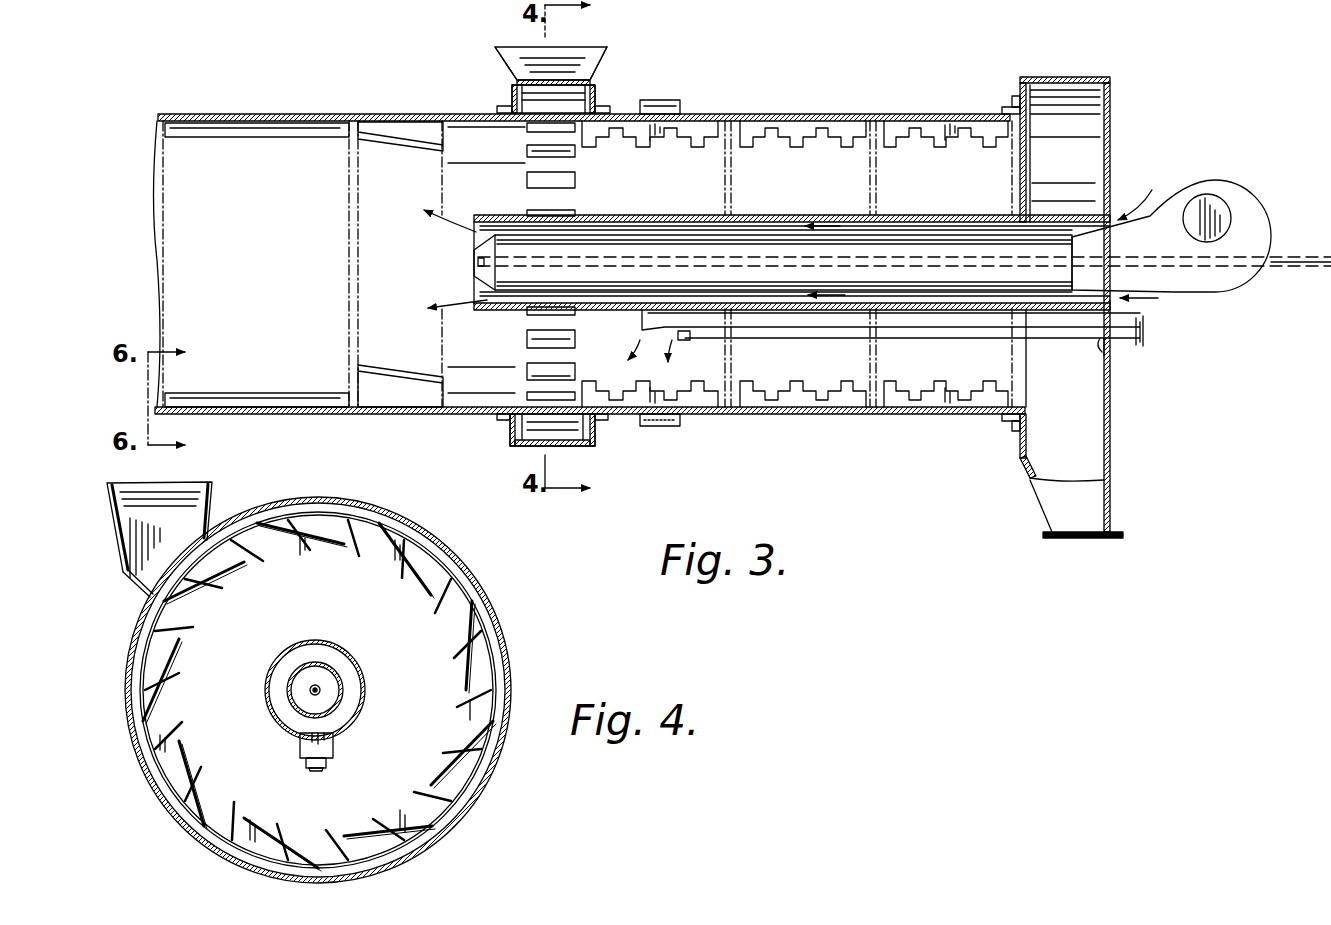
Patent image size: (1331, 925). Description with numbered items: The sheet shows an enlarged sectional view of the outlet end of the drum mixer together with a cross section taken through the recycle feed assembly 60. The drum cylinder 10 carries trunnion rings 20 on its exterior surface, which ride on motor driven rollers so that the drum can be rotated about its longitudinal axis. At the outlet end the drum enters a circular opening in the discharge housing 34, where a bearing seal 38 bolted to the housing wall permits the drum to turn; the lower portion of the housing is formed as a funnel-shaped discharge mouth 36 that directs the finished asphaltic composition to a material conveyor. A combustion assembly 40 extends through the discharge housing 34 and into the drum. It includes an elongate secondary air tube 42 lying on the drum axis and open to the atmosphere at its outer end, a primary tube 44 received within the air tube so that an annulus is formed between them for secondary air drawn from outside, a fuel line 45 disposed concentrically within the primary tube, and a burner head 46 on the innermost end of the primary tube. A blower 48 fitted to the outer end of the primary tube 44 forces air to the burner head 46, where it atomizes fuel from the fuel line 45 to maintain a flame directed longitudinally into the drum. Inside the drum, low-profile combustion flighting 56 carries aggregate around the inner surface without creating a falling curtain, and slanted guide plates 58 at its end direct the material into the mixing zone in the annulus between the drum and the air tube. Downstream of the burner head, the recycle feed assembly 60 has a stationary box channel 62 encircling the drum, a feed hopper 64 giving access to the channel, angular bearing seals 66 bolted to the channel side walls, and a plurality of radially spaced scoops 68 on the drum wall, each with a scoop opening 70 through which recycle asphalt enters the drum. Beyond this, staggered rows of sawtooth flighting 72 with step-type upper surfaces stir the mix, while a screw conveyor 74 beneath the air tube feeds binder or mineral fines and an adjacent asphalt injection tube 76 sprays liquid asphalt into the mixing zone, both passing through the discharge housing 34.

In FIG. 3, the drum cylinder 10 is at (336, 111).
In FIG. 3, the trunnion rings 20 is at (665, 100).
In FIG. 3, the discharge housing 34 is at (1092, 76).
In FIG. 3, the discharge mouth 36 is at (1108, 507).
In FIG. 3, the bearing seal 38 is at (1006, 106).
In FIG. 3, the combustion assembly 40 is at (490, 212).
In FIG. 3, the secondary air tube 42 is at (766, 217).
In FIG. 4, the secondary air tube 42 is at (336, 648).
In FIG. 3, the primary tube 44 is at (970, 240).
In FIG. 4, the primary tube 44 is at (288, 672).
In FIG. 3, the fuel line 45 is at (479, 268).
In FIG. 4, the fuel line 45 is at (320, 690).
In FIG. 3, the burner head 46 is at (474, 251).
In FIG. 3, the blower 48 is at (1240, 270).
In FIG. 3, the combustion flighting 56 is at (272, 136).
In FIG. 3, the slanted guide plates 58 is at (417, 125).
In FIG. 3, the recycle feed assembly 60 is at (506, 44).
In FIG. 4, the recycle feed assembly 60 is at (216, 491).
In FIG. 3, the box channel 62 is at (596, 90).
In FIG. 4, the box channel 62 is at (125, 656).
In FIG. 3, the feed hopper 64 is at (582, 56).
In FIG. 4, the feed hopper 64 is at (120, 550).
In FIG. 3, the angular bearing seals 66 is at (500, 109).
In FIG. 3, the scoops 68 is at (528, 98).
In FIG. 4, the scoops 68 is at (142, 740).
In FIG. 3, the scoop opening 70 is at (576, 180).
In FIG. 4, the scoop opening 70 is at (176, 662).
In FIG. 3, the sawtooth flighting 72 is at (664, 133).
In FIG. 4, the sawtooth flighting 72 is at (345, 565).
In FIG. 3, the screw conveyor 74 is at (1145, 326).
In FIG. 4, the screw conveyor 74 is at (334, 746).
In FIG. 3, the asphalt injection tube 76 is at (1112, 348).
In FIG. 4, the asphalt injection tube 76 is at (320, 768).